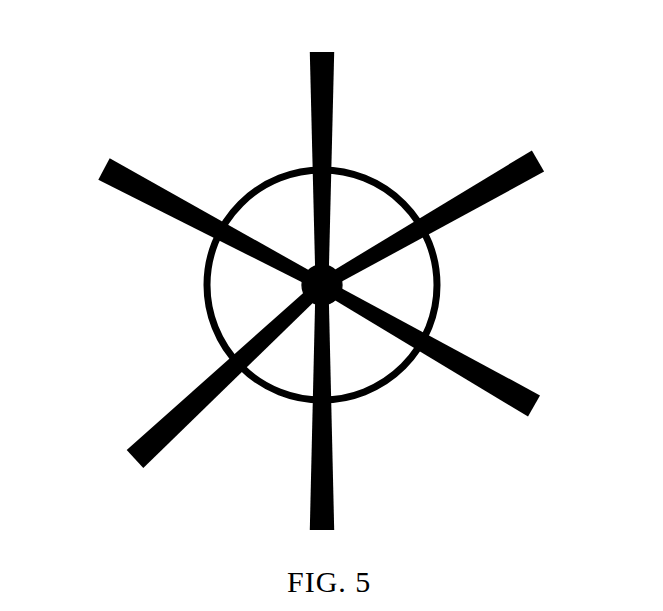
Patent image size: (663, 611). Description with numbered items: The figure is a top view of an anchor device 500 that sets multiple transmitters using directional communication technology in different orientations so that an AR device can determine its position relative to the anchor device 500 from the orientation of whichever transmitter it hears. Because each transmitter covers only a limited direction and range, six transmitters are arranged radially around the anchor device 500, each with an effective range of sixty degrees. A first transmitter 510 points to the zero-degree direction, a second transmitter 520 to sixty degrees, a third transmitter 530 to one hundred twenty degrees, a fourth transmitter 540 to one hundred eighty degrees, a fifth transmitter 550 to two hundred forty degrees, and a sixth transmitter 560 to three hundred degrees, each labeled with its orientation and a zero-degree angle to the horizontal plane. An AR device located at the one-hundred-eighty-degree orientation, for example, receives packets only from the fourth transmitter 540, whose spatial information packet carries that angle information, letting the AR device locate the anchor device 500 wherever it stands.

The anchor device 500 is at (442, 283).
The first transmitter 510 is at (335, 490).
The second transmitter 520 is at (512, 377).
The third transmitter 530 is at (520, 187).
The fourth transmitter 540 is at (335, 90).
The fifth transmitter 550 is at (140, 200).
The sixth transmitter 560 is at (168, 410).